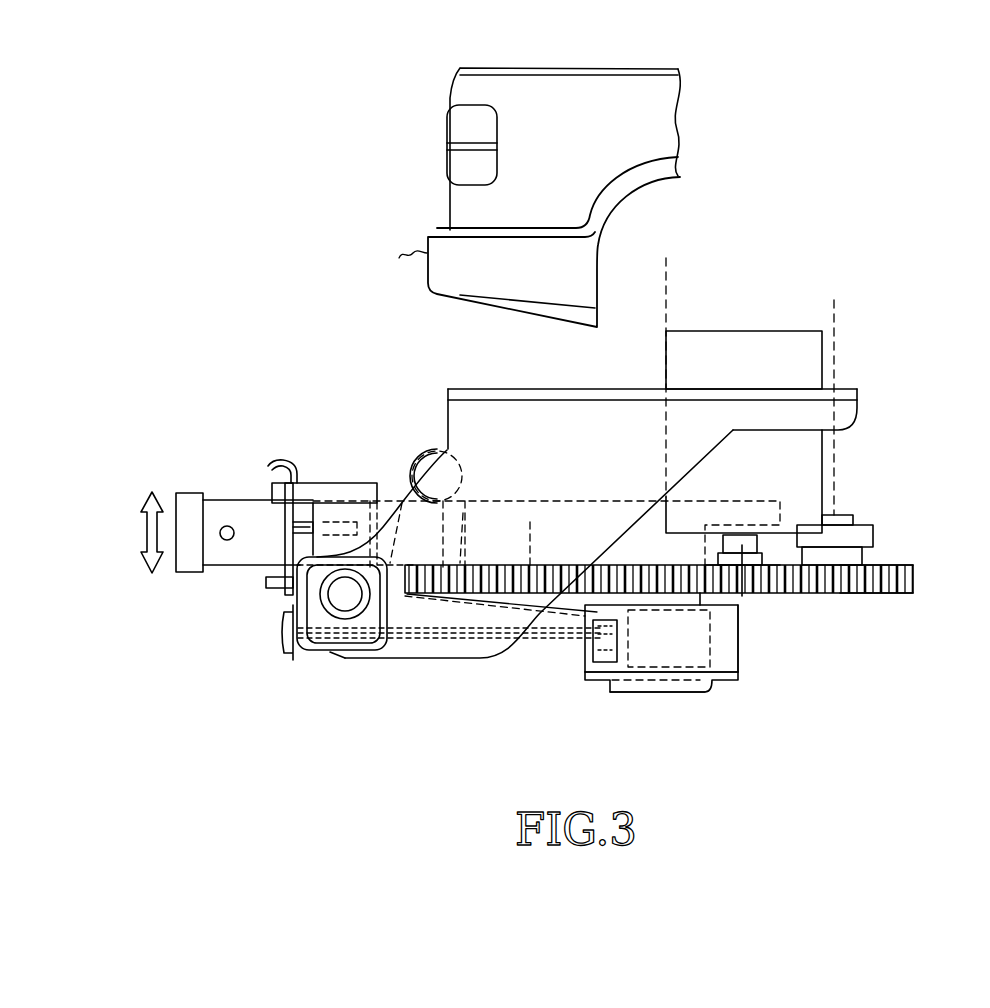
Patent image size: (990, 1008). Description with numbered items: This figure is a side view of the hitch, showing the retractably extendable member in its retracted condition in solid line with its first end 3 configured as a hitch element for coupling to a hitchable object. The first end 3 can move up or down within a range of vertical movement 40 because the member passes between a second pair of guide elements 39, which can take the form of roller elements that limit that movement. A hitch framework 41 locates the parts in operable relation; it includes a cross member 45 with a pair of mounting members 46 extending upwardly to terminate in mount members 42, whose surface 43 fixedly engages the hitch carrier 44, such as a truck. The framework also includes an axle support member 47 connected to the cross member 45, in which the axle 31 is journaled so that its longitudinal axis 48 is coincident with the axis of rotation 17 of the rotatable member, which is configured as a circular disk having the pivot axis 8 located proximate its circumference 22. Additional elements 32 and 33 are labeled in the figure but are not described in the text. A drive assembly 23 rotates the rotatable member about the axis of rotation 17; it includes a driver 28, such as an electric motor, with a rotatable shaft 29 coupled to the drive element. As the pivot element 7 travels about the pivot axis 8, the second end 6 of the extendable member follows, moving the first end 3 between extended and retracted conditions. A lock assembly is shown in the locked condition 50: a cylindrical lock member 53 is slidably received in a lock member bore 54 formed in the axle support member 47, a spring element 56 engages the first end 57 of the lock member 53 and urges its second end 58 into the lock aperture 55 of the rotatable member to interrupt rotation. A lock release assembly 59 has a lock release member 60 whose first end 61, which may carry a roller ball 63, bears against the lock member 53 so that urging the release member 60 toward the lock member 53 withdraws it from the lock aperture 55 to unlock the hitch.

The first end 3 is at (190, 572).
The vertical movement 40 is at (150, 532).
The cross member 45 is at (320, 648).
The lock release member 60 is at (400, 640).
The lock release assembly 59 is at (443, 667).
The first end 61 is at (533, 637).
The fastening bolt 32 is at (597, 630).
The first end 57 is at (587, 665).
The axle 31 is at (640, 640).
The housing bottom 33 is at (649, 683).
The longitudinal axis 48 is at (653, 684).
The axle support member 47 is at (740, 673).
The spring element 56 is at (613, 633).
The rotatable shaft 29 is at (743, 597).
The drive assembly 23 is at (791, 603).
The circumference 22 is at (915, 568).
The second end 6 is at (875, 530).
The pivot element 7 is at (852, 515).
The pivot axis 8 is at (834, 397).
The driver 28 is at (778, 338).
The mount member 42 is at (857, 393).
The axis of rotation 17 is at (567, 446).
The surface 43 is at (525, 389).
The mounting member 46 is at (462, 417).
The hitch framework 41 is at (457, 375).
The hitch carrier 44 is at (427, 253).
The second pair of guide elements 39 is at (418, 462).
The locked condition 50 is at (575, 573).
The second end 58 is at (607, 589).
The lock member 53 is at (613, 617).
The lock aperture 55 is at (602, 605).
The lock member bore 54 is at (617, 627).
The roller ball 63 is at (579, 631).